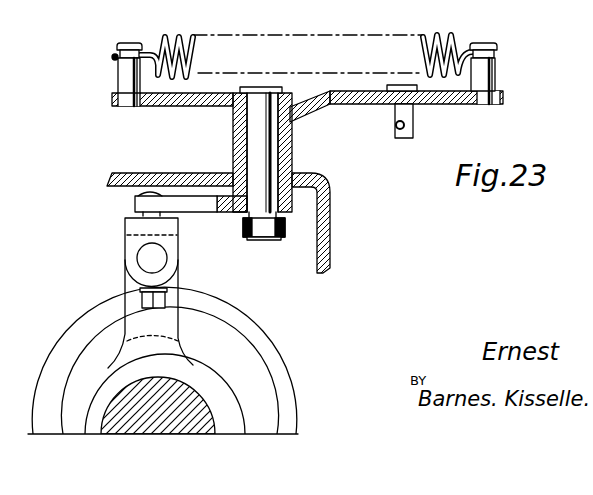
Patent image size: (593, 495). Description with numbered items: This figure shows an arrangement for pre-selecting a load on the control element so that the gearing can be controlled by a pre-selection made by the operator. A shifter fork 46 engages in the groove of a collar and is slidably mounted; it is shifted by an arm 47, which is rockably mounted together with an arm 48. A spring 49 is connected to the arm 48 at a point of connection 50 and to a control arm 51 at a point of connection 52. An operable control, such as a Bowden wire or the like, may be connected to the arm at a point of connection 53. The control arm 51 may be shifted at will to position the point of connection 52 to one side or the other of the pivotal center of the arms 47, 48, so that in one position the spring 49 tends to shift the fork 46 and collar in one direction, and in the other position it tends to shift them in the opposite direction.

The shifter fork 46 is at (130, 292).
The arm 47 is at (200, 210).
The arm 48 is at (190, 107).
The spring 49 is at (160, 42).
The point of connection of spring to arm 50 is at (127, 78).
The control arm 51 is at (323, 105).
The point of connection of spring to control arm 52 is at (498, 75).
The point of connection for operable control 53 is at (413, 122).